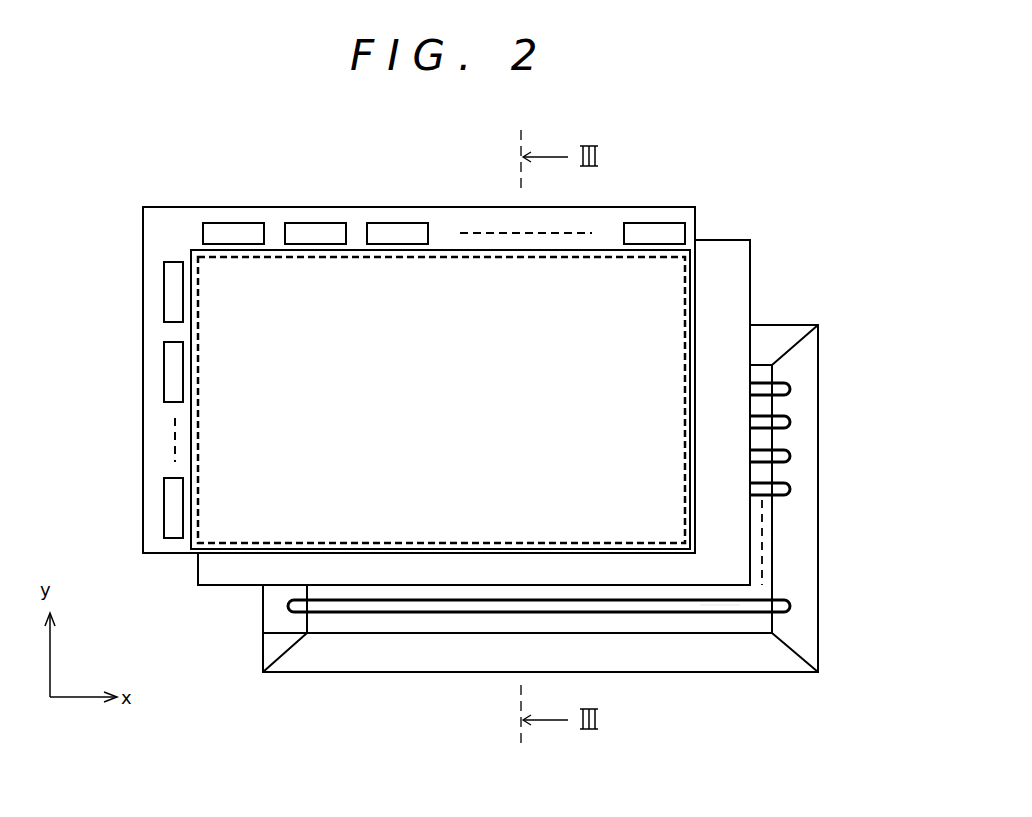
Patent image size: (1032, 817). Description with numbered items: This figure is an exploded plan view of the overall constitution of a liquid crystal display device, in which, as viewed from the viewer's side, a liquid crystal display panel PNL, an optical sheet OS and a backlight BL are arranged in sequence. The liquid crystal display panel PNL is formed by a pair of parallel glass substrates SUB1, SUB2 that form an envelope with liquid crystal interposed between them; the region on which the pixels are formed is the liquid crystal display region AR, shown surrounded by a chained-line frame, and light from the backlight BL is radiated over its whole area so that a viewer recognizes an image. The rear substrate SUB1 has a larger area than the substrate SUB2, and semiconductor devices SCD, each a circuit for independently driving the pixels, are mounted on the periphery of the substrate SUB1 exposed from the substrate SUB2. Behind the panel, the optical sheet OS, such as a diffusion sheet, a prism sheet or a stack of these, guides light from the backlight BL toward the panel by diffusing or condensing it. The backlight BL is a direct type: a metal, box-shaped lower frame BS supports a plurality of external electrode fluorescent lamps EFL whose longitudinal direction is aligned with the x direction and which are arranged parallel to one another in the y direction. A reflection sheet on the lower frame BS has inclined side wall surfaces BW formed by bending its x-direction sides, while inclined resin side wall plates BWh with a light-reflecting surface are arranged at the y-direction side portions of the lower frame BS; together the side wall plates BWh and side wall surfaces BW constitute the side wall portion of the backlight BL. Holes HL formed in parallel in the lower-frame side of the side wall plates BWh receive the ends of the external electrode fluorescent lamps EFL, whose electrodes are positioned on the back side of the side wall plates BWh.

The liquid crystal display panel PNL is at (262, 197).
The semiconductor device SCD is at (400, 207).
The substrate SUB1 is at (143, 288).
The substrate SUB2 is at (190, 438).
The liquid crystal display region AR is at (441, 400).
The optical sheet OS is at (752, 266).
The side wall surface BW is at (791, 326).
The side wall plate BWh is at (806, 570).
The backlight BL is at (822, 520).
The hole HL is at (790, 390).
The external electrode fluorescent lamp EFL is at (773, 488).
The lower frame BS is at (655, 625).